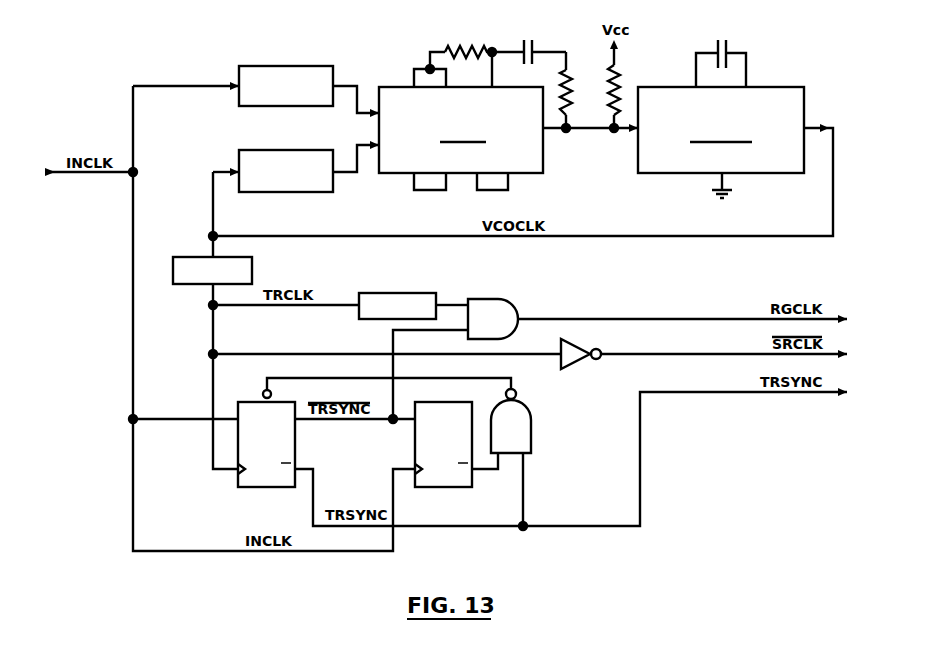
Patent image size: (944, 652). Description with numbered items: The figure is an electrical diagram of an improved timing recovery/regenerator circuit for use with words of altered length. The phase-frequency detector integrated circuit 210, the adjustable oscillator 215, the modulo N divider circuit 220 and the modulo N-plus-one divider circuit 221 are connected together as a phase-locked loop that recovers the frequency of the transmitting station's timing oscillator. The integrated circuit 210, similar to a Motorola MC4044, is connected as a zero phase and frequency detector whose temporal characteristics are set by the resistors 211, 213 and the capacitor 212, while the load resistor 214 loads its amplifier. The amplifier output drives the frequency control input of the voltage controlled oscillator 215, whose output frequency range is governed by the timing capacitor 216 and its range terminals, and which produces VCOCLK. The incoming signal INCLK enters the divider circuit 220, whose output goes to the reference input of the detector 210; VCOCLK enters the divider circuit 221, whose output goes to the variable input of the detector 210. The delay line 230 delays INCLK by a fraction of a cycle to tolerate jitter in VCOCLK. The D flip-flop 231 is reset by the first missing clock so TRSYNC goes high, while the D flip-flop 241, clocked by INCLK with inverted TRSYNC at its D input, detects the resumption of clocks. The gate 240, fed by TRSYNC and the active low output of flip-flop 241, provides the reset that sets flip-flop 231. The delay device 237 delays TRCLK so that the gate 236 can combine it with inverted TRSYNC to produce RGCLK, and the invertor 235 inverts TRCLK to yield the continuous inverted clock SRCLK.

The phase-frequency detector integrated circuit 210 is at (527, 173).
The resistor 211 is at (456, 47).
The capacitor 212 is at (537, 52).
The resistor 213 is at (568, 86).
The load resistor 214 is at (616, 86).
The adjustable oscillator 215 is at (646, 173).
The timing capacitor 216 is at (731, 51).
The modulo N divider circuit 220 is at (318, 66).
The modulo (N+1) divider circuit 221 is at (318, 150).
The delay line 230 is at (191, 256).
The D flip-flop 231 is at (258, 488).
The invertor 235 is at (574, 372).
The gate 236 is at (499, 298).
The delay device 237 is at (410, 292).
The gate 240 is at (533, 443).
The D flip-flop 241 is at (462, 488).